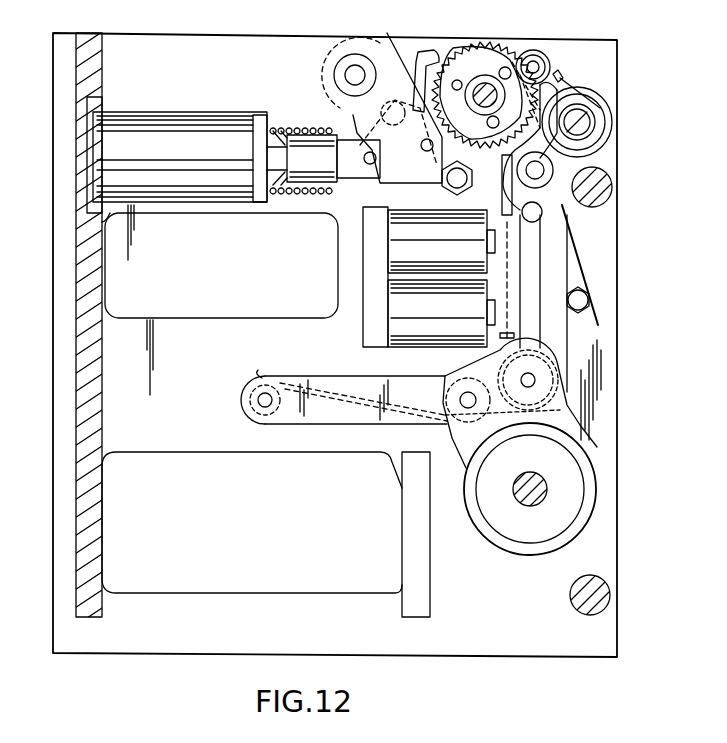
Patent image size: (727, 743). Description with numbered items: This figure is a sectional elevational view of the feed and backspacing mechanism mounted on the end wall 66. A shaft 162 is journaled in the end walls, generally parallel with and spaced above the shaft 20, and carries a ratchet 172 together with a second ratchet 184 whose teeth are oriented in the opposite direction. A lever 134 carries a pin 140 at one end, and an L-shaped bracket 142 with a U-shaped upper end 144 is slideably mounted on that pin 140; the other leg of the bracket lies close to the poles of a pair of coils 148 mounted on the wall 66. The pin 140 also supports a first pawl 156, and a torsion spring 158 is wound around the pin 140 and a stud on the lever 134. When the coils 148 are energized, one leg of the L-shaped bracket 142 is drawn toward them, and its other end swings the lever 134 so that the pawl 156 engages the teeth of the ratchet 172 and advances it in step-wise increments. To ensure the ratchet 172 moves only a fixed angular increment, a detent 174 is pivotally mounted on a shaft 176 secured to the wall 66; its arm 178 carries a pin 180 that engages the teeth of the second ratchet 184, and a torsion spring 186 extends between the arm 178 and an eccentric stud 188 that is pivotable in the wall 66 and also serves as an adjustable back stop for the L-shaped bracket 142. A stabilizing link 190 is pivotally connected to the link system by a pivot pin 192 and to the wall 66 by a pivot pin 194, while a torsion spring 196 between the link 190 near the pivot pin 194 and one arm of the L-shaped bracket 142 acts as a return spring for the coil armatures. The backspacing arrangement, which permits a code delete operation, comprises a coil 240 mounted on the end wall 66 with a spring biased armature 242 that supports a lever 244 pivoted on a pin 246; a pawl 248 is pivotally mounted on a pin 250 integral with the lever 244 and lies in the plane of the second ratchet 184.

The shaft 20 is at (545, 487).
The end wall 66 is at (602, 553).
The lever 134 is at (532, 252).
The pin 140 is at (545, 166).
The L-shaped bracket 142 is at (512, 282).
The U-shaped upper end 144 is at (600, 181).
The coils 148 is at (405, 297).
The first pawl 156 is at (568, 84).
The torsion spring 158 is at (545, 210).
The shaft 162 is at (485, 107).
The ratchet 172 is at (490, 42).
The detent 174 is at (577, 66).
The shaft 176 is at (586, 120).
The arm 178 is at (542, 50).
The pin 180 is at (534, 50).
The second ratchet 184 is at (467, 46).
The torsion spring 186 is at (563, 72).
The eccentric stud 188 is at (590, 300).
The stabilizing link 190 is at (340, 366).
The pivot pin 192 is at (466, 398).
The pivot pin 194 is at (258, 400).
The torsion spring 196 is at (262, 376).
The coil 240 is at (105, 146).
The spring biased armature 242 is at (303, 143).
The lever 244 is at (393, 62).
The pin 246 is at (345, 75).
The pawl 248 is at (425, 47).
The pin 250 is at (425, 152).